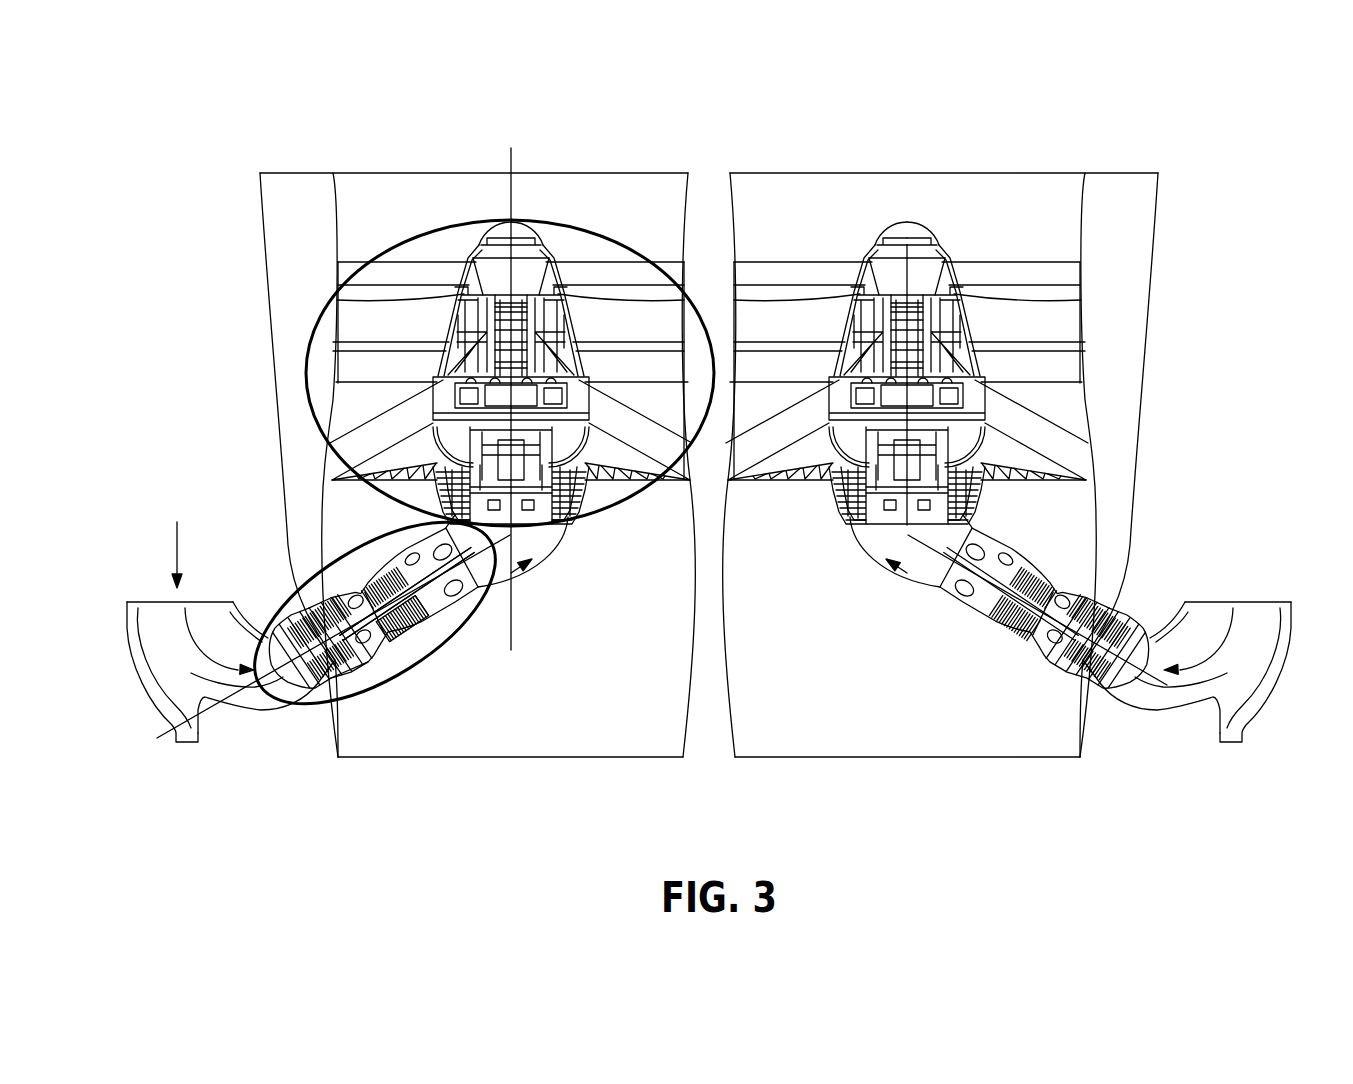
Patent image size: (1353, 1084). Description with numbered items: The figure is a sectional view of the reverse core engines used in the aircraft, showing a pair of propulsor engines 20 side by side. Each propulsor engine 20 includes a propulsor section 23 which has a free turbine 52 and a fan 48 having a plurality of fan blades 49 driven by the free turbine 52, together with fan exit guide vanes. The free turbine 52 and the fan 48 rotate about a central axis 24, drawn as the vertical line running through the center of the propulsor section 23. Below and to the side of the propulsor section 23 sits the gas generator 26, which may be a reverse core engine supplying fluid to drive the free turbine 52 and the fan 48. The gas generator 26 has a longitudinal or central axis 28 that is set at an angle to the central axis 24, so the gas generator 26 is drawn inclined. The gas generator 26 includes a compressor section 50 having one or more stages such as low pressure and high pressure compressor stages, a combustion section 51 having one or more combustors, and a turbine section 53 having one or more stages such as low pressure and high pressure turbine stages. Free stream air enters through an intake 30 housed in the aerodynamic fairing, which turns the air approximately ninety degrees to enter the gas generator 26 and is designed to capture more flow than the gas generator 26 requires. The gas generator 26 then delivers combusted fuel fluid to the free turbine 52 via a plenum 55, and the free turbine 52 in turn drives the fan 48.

The propulsor engine 20 is at (709, 454).
The propulsor section 23 is at (320, 292).
The central axis 24 is at (513, 158).
The gas generator 26 is at (341, 619).
The central axis 28 is at (160, 738).
The intake 30 is at (1233, 580).
The fan 48 is at (608, 282).
The fan blades 49 is at (385, 323).
The compressor section 50 is at (345, 665).
The combustion section 51 is at (385, 647).
The free turbine 52 is at (580, 505).
The turbine section 53 is at (410, 615).
The plenum 55 is at (535, 557).